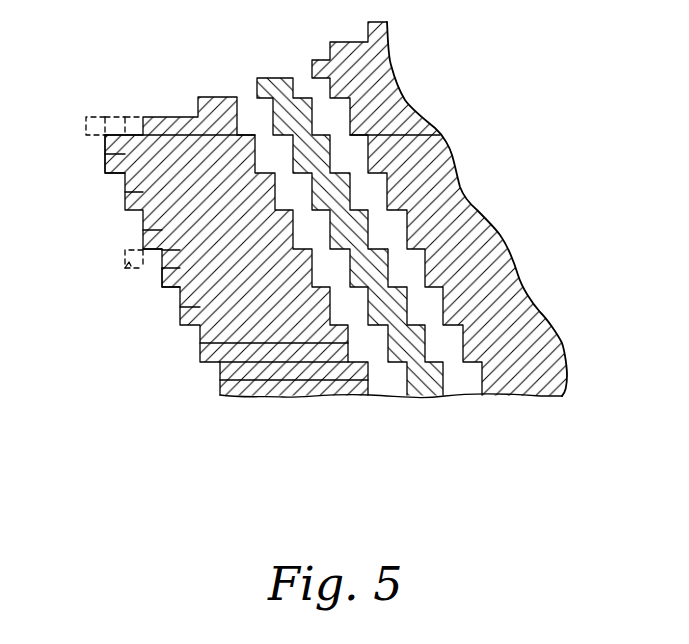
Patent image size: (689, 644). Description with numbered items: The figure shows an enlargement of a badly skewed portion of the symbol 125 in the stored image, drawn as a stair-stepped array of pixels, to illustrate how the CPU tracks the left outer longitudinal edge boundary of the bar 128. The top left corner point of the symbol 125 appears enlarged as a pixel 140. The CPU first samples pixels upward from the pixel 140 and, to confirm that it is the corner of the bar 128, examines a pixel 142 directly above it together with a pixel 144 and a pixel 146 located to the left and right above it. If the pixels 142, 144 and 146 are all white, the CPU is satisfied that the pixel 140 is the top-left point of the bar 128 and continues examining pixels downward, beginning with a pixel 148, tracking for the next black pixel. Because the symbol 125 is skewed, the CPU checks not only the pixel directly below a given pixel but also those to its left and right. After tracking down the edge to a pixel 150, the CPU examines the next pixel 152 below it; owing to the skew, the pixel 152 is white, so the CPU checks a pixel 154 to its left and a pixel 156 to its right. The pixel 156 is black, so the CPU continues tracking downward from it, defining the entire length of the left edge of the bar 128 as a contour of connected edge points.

The symbol 125 is at (294, 266).
The bar 128 is at (282, 400).
The pixel 140 is at (110, 144).
The pixel 142 is at (113, 116).
The pixel 144 is at (85, 121).
The pixel 146 is at (138, 120).
The pixel 148 is at (107, 168).
The pixel 150 is at (147, 242).
The pixel 152 is at (150, 268).
The pixel 154 is at (128, 264).
The pixel 156 is at (178, 270).